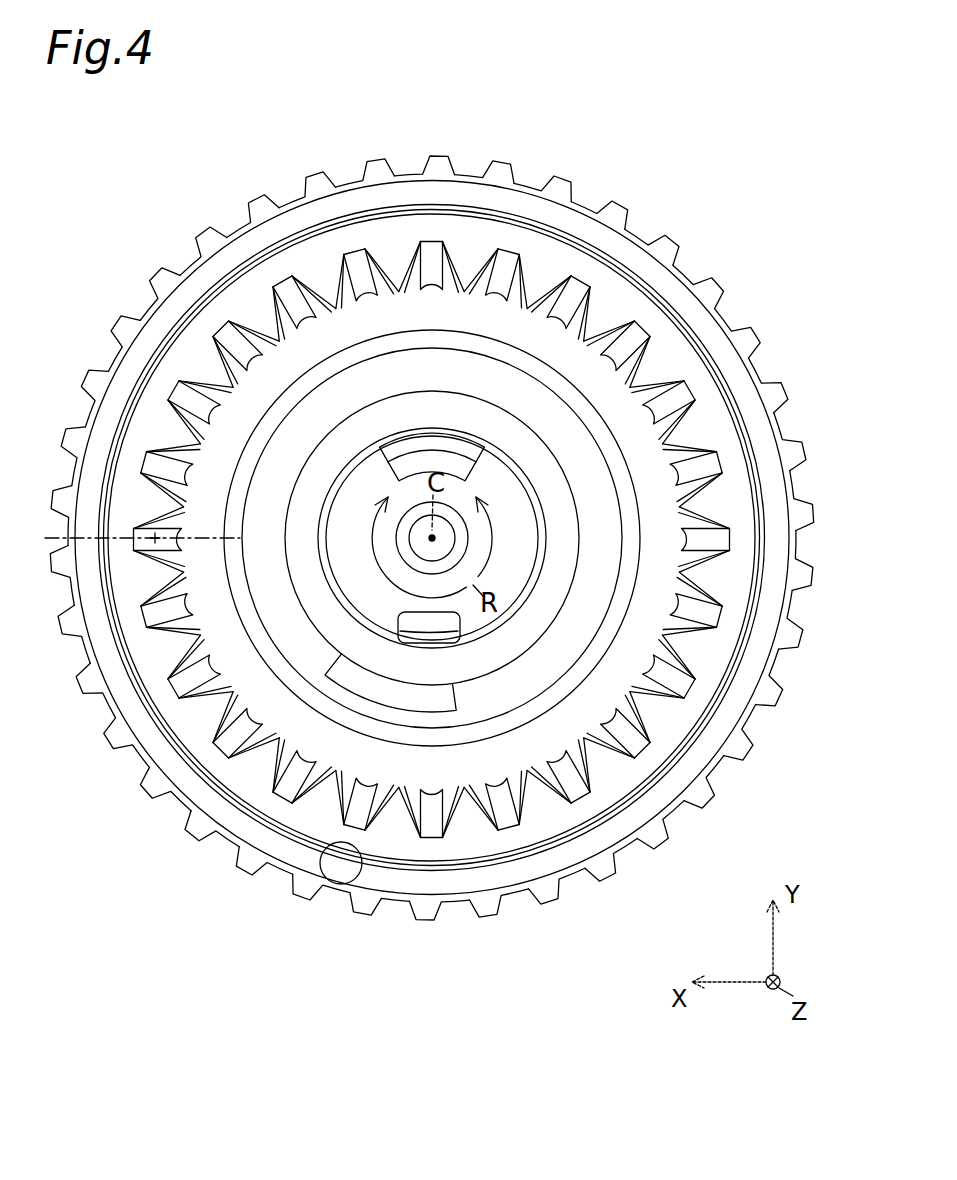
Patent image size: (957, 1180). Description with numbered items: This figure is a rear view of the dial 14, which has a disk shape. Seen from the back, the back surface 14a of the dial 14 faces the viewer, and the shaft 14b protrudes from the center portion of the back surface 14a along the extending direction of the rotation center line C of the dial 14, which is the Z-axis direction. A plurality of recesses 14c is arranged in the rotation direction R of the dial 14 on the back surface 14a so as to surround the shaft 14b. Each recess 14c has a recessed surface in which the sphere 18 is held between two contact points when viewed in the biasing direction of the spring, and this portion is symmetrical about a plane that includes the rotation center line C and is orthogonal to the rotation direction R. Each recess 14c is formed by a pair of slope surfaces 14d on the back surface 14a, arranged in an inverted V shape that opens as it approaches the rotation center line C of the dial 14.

The dial 14 is at (670, 238).
The back surface 14a is at (668, 353).
The shaft 14b is at (535, 575).
The recess 14c is at (230, 335).
The slope surface 14d is at (226, 423).
The sphere 18 is at (122, 534).